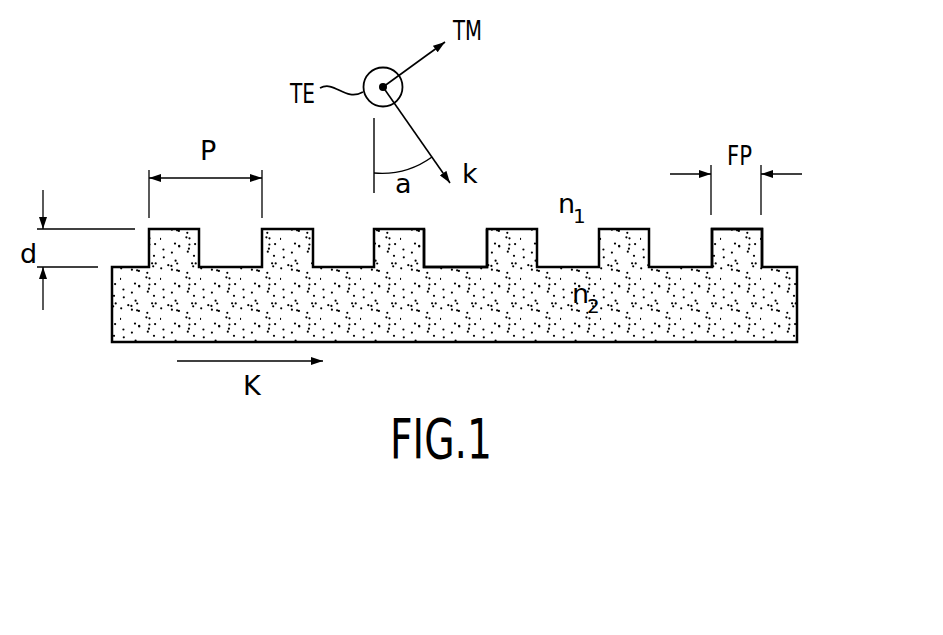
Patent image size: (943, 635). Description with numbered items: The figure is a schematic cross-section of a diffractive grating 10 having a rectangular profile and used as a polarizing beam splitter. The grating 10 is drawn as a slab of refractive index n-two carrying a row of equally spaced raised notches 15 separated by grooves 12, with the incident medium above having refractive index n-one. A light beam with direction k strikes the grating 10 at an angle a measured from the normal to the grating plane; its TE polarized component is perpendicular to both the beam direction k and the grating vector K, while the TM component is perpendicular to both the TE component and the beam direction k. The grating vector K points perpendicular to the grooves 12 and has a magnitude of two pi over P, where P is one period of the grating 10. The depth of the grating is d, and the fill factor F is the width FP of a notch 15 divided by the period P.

The diffractive grating 10 is at (797, 313).
The grooves 12 is at (452, 247).
The notch 15 is at (733, 245).